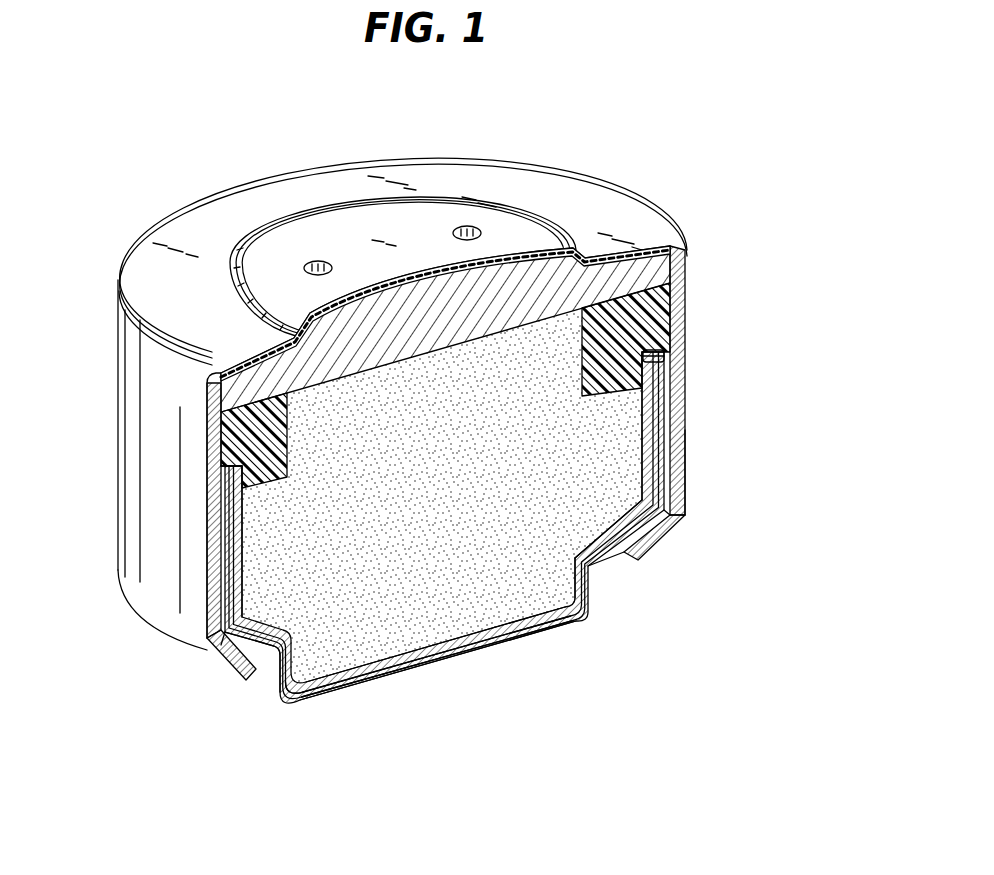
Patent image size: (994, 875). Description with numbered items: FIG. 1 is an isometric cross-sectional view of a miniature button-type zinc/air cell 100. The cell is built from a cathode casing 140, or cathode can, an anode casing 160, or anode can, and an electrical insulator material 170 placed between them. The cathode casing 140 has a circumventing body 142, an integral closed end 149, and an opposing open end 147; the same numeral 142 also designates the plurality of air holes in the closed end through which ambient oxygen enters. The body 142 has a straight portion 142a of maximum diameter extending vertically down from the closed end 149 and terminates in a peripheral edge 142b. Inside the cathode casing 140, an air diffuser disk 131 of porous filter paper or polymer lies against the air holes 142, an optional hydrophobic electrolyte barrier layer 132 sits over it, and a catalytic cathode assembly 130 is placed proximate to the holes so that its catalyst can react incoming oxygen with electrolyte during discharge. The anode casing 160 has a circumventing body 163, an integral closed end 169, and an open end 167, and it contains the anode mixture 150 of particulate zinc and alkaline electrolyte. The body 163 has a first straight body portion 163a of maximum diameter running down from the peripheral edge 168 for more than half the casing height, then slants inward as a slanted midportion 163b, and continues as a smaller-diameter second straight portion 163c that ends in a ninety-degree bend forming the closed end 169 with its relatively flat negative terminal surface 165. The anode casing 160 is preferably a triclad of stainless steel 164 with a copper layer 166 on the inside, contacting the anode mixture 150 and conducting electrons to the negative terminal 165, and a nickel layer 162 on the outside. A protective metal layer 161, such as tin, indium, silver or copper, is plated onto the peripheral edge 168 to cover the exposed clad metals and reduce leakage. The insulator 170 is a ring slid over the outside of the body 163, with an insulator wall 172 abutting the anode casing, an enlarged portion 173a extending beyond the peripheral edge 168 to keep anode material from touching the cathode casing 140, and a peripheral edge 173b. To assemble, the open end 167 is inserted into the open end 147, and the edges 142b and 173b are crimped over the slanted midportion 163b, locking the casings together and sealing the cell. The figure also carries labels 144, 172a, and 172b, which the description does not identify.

The zinc/air cell 100 is at (210, 159).
The catalytic cathode assembly 130 is at (502, 312).
The air diffuser disk 131 is at (686, 247).
The electrolyte barrier layer 132 is at (660, 264).
The cathode casing 140 is at (466, 390).
The circumventing body 142 is at (318, 261).
The straight portion 142a is at (684, 478).
The peripheral edge 142b is at (653, 550).
The raised lid center portion 144 is at (425, 217).
The open end 147 is at (254, 670).
The integral closed end 149 is at (177, 219).
The anode mixture 150 is at (513, 600).
The anode casing 160 is at (432, 554).
The protective metal layer 161 is at (652, 345).
The nickel layer 162 is at (500, 640).
The circumventing body 163 is at (237, 533).
The first straight body portion 163a is at (650, 444).
The slanted midportion 163b is at (600, 563).
The second straight portion 163c is at (587, 592).
The stainless steel 164 is at (457, 650).
The negative terminal surface 165 is at (395, 670).
The copper layer 166 is at (327, 692).
The open end 167 is at (242, 460).
The peripheral edge 168 is at (662, 364).
The integral closed end 169 is at (354, 686).
The electrical insulator material 170 is at (667, 412).
The insulator wall 172 is at (667, 433).
The liner outer layer step 172a is at (222, 600).
The can bottom inclined portion left 172b is at (217, 655).
The enlarged portion 173a is at (228, 420).
The peripheral edge 173b is at (673, 530).